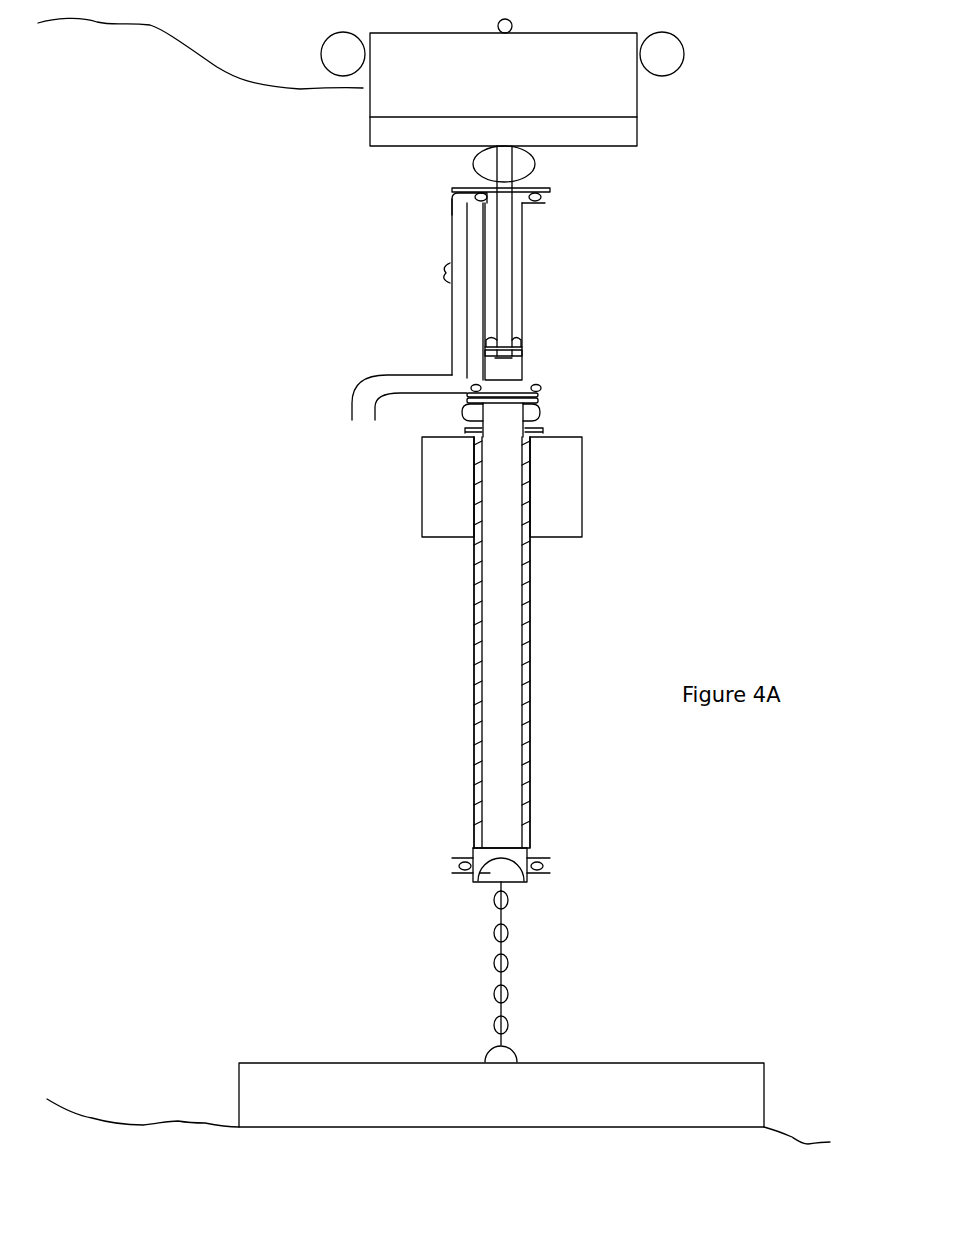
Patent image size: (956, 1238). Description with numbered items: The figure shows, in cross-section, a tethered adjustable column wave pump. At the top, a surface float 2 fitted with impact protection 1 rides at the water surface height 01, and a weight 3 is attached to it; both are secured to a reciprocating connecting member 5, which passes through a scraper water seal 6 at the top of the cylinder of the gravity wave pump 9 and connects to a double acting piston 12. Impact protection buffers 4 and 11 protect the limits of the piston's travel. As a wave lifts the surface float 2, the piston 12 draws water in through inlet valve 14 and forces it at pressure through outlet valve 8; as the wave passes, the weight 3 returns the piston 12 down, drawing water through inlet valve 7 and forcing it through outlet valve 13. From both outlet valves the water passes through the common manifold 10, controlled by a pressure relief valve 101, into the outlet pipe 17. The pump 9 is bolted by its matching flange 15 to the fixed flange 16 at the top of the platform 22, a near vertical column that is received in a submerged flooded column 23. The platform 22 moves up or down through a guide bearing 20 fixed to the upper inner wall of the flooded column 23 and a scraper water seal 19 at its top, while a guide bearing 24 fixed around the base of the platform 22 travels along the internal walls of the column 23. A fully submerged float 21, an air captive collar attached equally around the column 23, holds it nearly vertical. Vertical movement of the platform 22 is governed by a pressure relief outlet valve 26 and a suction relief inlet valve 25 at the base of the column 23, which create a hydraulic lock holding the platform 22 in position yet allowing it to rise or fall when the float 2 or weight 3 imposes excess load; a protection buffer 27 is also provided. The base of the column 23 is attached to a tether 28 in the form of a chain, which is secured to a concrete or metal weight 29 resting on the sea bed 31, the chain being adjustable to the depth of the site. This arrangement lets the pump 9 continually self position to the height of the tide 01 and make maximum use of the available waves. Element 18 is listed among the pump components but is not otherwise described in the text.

The water surface height 01 is at (150, 23).
The impact protection 1 is at (682, 45).
The surface float 2 is at (628, 98).
The weight 3 is at (627, 135).
The impact protection buffer 4 is at (477, 162).
The reciprocating connecting member 5 is at (507, 188).
The scraper water seal 6 is at (477, 190).
The inlet valve 7 is at (543, 195).
The outlet valve 8 is at (453, 198).
The gravity wave pump 9 is at (523, 277).
The pressure relief valve 101 is at (440, 272).
The manifold 10 is at (460, 302).
The impact protection buffer 11 is at (523, 340).
The double acting piston 12 is at (530, 355).
The outlet valve 13 is at (470, 388).
The inlet valve 14 is at (540, 387).
The matching flange 15 is at (540, 396).
The fixed flange 16 is at (538, 399).
The outlet pipe 17 is at (367, 413).
The collar 18 is at (540, 414).
The scraper water seal 19 is at (543, 432).
The guide bearing 20 is at (532, 457).
The fully submerged float 21 is at (562, 477).
The platform 22 is at (510, 582).
The submerged flooded column 23 is at (532, 657).
The guide bearing 24 is at (528, 835).
The suction relief inlet valve 25 is at (545, 865).
The pressure relief outlet valve 26 is at (462, 862).
The protection buffer 27 is at (455, 873).
The tether 28 is at (509, 961).
The weight 29 is at (581, 1073).
The sea bed 31 is at (173, 1128).